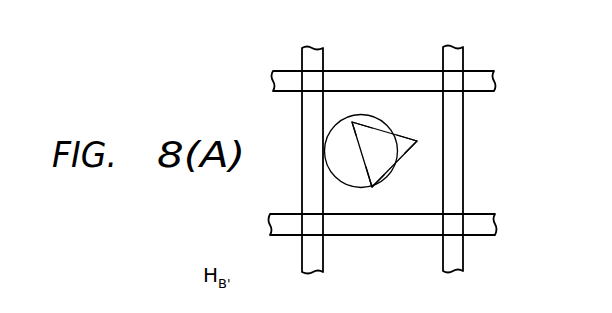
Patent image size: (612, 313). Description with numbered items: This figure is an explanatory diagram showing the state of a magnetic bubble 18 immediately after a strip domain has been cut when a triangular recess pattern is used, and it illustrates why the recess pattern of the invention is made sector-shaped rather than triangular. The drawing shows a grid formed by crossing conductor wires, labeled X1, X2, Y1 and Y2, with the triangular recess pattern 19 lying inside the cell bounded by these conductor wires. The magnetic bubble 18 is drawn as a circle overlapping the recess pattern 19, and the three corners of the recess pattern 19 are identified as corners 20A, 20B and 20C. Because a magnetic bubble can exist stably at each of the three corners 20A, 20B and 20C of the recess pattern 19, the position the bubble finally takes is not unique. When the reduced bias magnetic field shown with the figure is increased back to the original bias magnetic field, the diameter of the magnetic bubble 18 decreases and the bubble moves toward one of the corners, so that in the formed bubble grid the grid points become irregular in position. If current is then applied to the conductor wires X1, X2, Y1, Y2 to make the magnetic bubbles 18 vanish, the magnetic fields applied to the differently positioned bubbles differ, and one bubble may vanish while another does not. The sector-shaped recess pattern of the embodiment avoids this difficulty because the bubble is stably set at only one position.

The magnetic bubble 18 is at (379, 120).
The triangular recess pattern 19 is at (409, 137).
The corner of recess pattern 20A is at (363, 133).
The corner of recess pattern 20B is at (375, 172).
The corner of recess pattern 20C is at (417, 147).
The first X conductor line X1 is at (313, 52).
The second X conductor line X2 is at (455, 52).
The first Y conductor line Y1 is at (489, 80).
The second Y conductor line Y2 is at (490, 221).